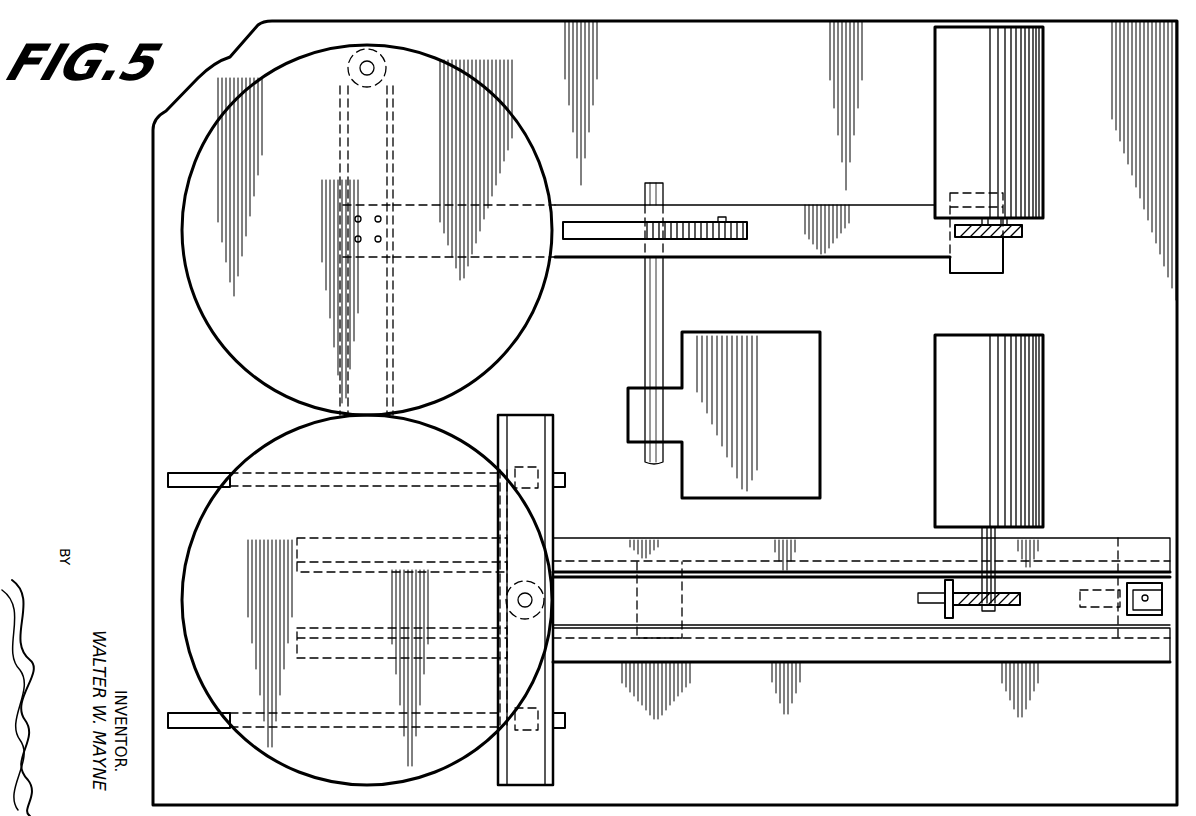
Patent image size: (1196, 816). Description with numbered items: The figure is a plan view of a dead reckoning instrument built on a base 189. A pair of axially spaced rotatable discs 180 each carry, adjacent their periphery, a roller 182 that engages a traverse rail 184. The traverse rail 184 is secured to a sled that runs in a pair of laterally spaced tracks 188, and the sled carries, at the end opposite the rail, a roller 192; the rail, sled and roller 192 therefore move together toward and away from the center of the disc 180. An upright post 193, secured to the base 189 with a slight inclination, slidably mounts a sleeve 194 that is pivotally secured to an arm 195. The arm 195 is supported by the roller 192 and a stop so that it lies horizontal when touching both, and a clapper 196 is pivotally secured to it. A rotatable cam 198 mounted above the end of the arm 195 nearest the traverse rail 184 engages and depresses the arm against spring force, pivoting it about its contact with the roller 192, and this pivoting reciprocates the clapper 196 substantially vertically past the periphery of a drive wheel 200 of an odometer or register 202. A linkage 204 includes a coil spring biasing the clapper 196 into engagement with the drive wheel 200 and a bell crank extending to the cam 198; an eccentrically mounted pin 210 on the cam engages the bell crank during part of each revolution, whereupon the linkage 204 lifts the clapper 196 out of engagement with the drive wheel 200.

The rotatable discs 180 is at (287, 452).
The roller 182 is at (340, 84).
The traverse rail 184 is at (393, 323).
The tracks 188 is at (604, 537).
The base 189 is at (750, 127).
The roller 192 is at (1118, 560).
The upright post 193 is at (1140, 588).
The sleeve 194 is at (1157, 606).
The arm 195 is at (800, 540).
The clapper 196 is at (942, 584).
The rotatable cam 198 is at (617, 222).
The drive wheel 200 is at (970, 608).
The odometer or register 202 is at (935, 360).
The linkage 204 is at (934, 612).
The eccentrically mounted pin 210 is at (726, 218).